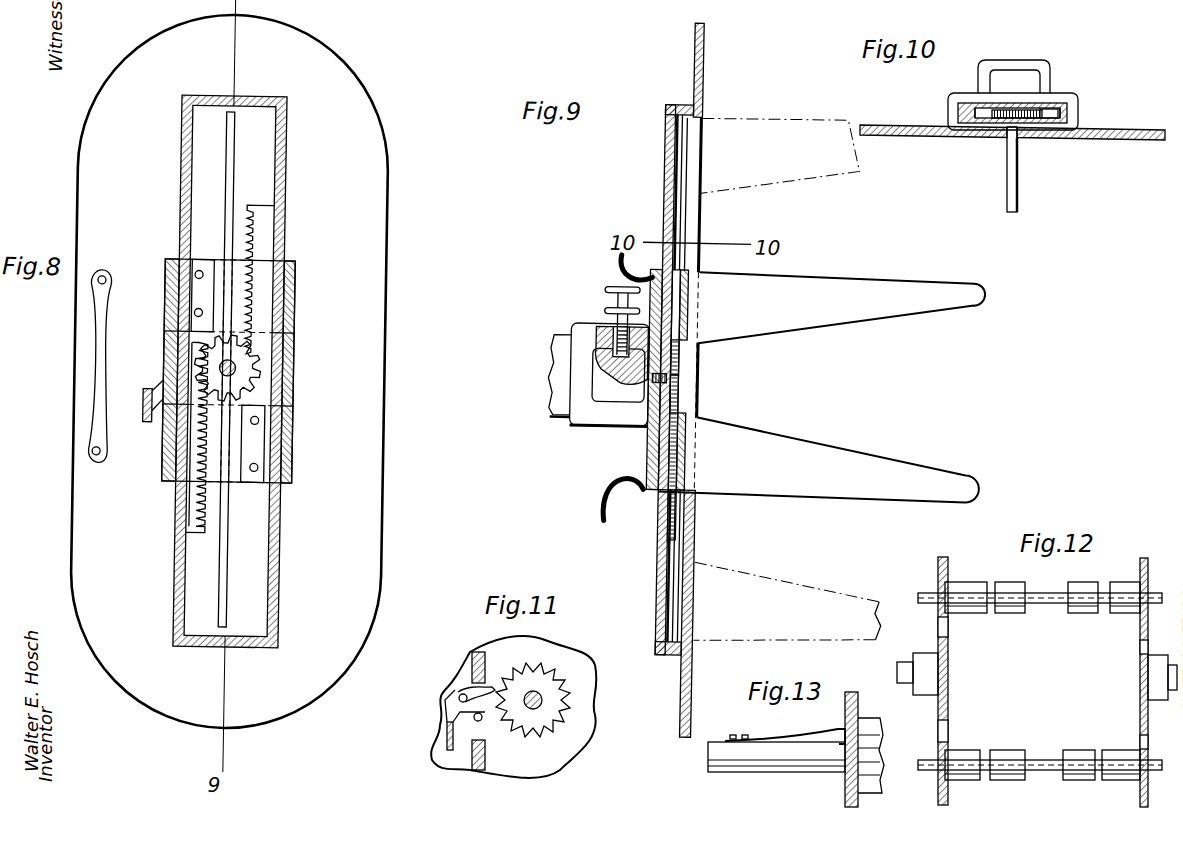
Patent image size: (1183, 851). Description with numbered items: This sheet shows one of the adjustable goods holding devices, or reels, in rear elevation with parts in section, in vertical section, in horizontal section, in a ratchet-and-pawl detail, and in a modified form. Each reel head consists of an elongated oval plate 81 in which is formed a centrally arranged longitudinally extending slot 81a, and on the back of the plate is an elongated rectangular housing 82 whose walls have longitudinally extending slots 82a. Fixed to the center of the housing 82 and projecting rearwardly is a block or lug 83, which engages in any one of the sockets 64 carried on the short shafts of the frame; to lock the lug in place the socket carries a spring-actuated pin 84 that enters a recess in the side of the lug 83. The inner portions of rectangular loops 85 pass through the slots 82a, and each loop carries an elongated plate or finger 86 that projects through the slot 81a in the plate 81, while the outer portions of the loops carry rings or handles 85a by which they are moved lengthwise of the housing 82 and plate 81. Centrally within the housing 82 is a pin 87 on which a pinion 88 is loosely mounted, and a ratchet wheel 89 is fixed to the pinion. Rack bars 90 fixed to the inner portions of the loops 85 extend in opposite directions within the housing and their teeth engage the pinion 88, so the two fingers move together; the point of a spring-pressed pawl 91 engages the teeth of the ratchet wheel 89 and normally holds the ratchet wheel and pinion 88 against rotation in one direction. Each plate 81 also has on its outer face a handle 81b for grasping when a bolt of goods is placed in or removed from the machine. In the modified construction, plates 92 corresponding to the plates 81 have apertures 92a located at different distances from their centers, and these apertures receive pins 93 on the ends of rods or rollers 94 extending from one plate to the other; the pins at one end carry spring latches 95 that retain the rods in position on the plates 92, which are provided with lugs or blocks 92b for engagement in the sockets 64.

In FIG. 9, the socket 64 is at (577, 393).
In FIG. 8, the oval plate 81 is at (372, 172).
In FIG. 9, the oval plate 81 is at (697, 68).
In FIG. 10, the oval plate 81 is at (925, 138).
In FIG. 8, the slot 81a is at (229, 166).
In FIG. 9, the slot 81a is at (697, 162).
In FIG. 10, the slot 81a is at (1011, 140).
In FIG. 8, the handle 81b is at (90, 383).
In FIG. 8, the housing 82 is at (272, 568).
In FIG. 9, the housing 82 is at (662, 160).
In FIG. 10, the housing 82 is at (968, 103).
In FIG. 9, the slot 82a is at (684, 222).
In FIG. 10, the slot 82a is at (965, 135).
In FIG. 9, the block or lug 83 is at (607, 395).
In FIG. 9, the spring-actuated pin 84 is at (600, 306).
In FIG. 8, the rectangular loop 85 is at (293, 298).
In FIG. 9, the rectangular loop 85 is at (667, 379).
In FIG. 10, the rectangular loop 85 is at (1080, 105).
In FIG. 9, the ring or handle 85a is at (617, 257).
In FIG. 10, the ring or handle 85a is at (1040, 65).
In FIG. 9, the plate or finger 86 is at (820, 310).
In FIG. 10, the plate or finger 86 is at (1020, 198).
In FIG. 8, the pin 87 is at (229, 368).
In FIG. 9, the pin 87 is at (652, 382).
In FIG. 11, the pin 87 is at (540, 715).
In FIG. 8, the pinion 88 is at (242, 390).
In FIG. 9, the pinion 88 is at (676, 372).
In FIG. 10, the pinion 88 is at (1045, 122).
In FIG. 9, the ratchet wheel 89 is at (684, 386).
In FIG. 11, the ratchet wheel 89 is at (555, 672).
In FIG. 8, the rack bar 90 is at (258, 242).
In FIG. 9, the rack bar 90 is at (678, 522).
In FIG. 10, the rack bar 90 is at (960, 115).
In FIG. 8, the spring-pressed pawl 91 is at (148, 425).
In FIG. 11, the spring-pressed pawl 91 is at (448, 730).
In FIG. 12, the plate 92 is at (940, 560).
In FIG. 13, the plate 92 is at (850, 695).
In FIG. 12, the aperture 92a is at (950, 622).
In FIG. 12, the lug or block 92b is at (905, 665).
In FIG. 12, the pin 93 is at (1152, 596).
In FIG. 13, the pin 93 is at (760, 766).
In FIG. 12, the rod or roller 94 is at (1095, 616).
In FIG. 13, the rod or roller 94 is at (876, 722).
In FIG. 13, the spring latch 95 is at (826, 731).